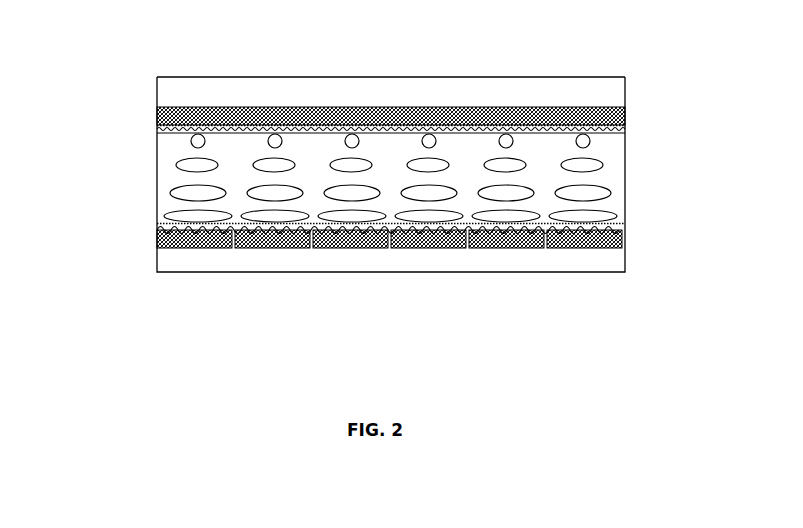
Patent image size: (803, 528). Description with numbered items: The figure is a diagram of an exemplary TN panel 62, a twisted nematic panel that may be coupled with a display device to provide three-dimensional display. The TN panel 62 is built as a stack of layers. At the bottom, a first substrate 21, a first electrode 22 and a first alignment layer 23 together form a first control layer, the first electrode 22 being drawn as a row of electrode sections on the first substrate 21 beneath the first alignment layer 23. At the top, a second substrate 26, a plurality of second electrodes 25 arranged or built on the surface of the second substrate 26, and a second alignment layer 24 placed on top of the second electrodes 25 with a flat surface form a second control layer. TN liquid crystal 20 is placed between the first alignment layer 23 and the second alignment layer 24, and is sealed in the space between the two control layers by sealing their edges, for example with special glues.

The TN panel 62 is at (464, 40).
The second substrate 26 is at (617, 84).
The second electrode 25 is at (617, 114).
The second alignment layer 24 is at (157, 130).
The TN liquid crystal 20 is at (615, 191).
The first alignment layer 23 is at (155, 223).
The first electrode 22 is at (621, 242).
The first substrate 21 is at (617, 265).